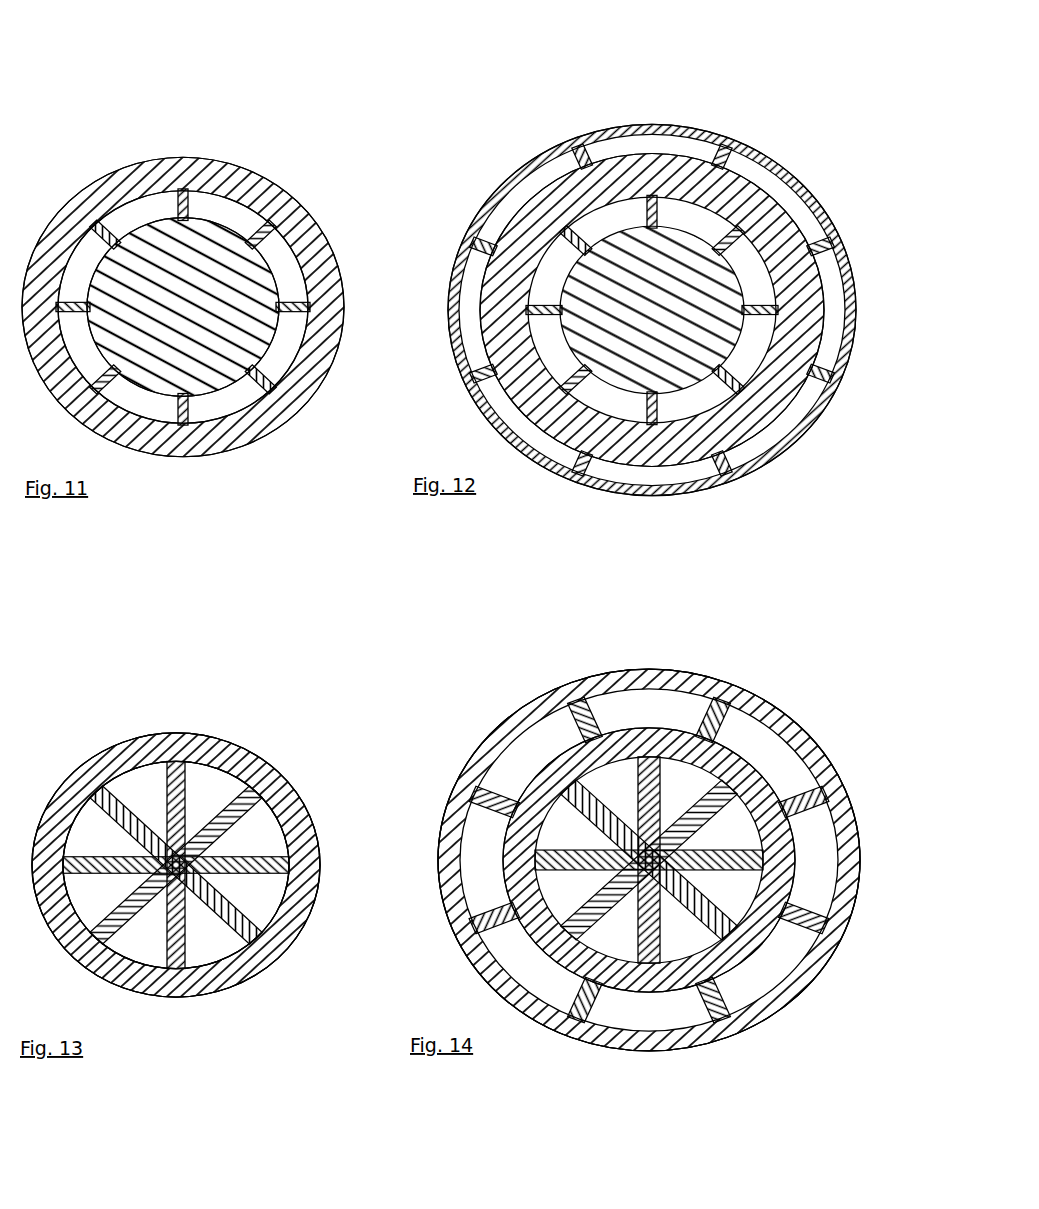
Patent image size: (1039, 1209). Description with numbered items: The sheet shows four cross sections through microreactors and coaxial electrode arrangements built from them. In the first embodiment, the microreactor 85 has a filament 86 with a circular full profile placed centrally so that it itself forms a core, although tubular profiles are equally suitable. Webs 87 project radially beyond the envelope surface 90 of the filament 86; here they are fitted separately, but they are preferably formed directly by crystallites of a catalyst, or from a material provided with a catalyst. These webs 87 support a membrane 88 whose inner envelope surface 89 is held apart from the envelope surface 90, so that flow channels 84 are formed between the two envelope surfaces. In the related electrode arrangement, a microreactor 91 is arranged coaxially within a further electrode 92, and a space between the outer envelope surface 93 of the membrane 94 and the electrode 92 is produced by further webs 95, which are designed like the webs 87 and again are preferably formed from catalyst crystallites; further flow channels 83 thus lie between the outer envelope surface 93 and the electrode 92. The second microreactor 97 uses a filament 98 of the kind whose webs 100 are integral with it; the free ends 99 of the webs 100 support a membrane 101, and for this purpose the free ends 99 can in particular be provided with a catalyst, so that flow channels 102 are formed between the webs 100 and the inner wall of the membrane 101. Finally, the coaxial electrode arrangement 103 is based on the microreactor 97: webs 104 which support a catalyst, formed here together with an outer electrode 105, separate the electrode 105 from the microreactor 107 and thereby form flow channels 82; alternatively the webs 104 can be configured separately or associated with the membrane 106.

In FIG. 14, the flow channels 82 is at (610, 705).
In FIG. 12, the further flow channels 83 is at (755, 183).
In FIG. 11, the flow channels 84 is at (130, 217).
In FIG. 11, the microreactor 85 is at (301, 168).
In FIG. 11, the filament 86 is at (163, 220).
In FIG. 11, the webs 87 is at (262, 385).
In FIG. 11, the membrane 88 is at (165, 445).
In FIG. 11, the inner envelope surface 89 is at (233, 212).
In FIG. 11, the envelope surface 90 is at (318, 222).
In FIG. 12, the microreactor 91 is at (770, 170).
In FIG. 12, the electrode 92 is at (805, 195).
In FIG. 12, the outer envelope surface 93 is at (650, 187).
In FIG. 12, the membrane 94 is at (615, 175).
In FIG. 12, the further webs 95 is at (588, 177).
In FIG. 13, the microreactor 97 is at (99, 738).
In FIG. 13, the filament 98 is at (231, 793).
In FIG. 13, the free ends 99 is at (256, 783).
In FIG. 13, the webs 100 is at (297, 792).
In FIG. 13, the membrane 101 is at (130, 743).
In FIG. 13, the flow channels 102 is at (150, 788).
In FIG. 14, the electrode arrangement 103 is at (751, 1055).
In FIG. 14, the webs 104 is at (605, 1048).
In FIG. 14, the outer electrode 105 is at (795, 1015).
In FIG. 14, the membrane 106 is at (740, 752).
In FIG. 14, the microreactor 107 is at (646, 718).